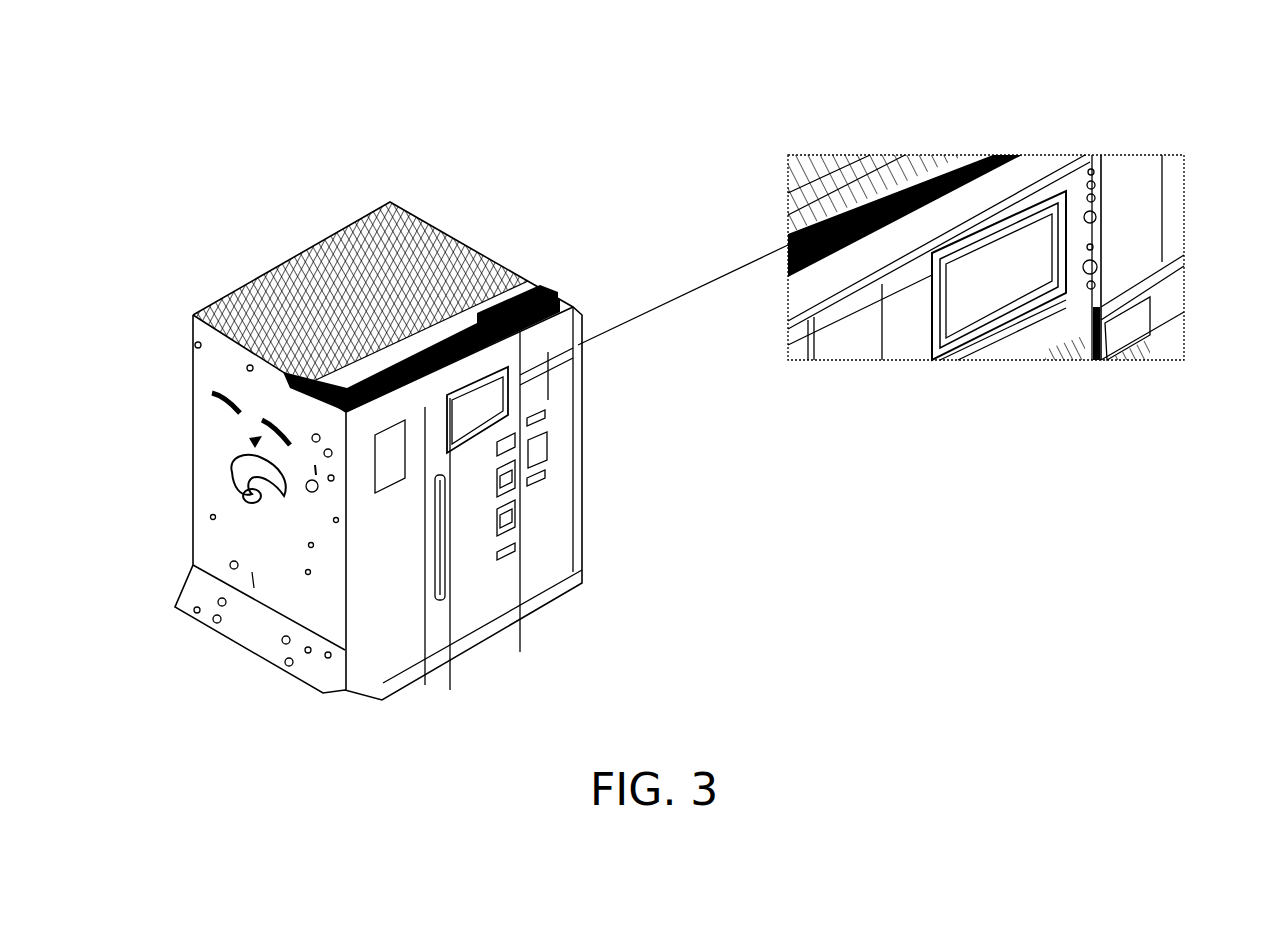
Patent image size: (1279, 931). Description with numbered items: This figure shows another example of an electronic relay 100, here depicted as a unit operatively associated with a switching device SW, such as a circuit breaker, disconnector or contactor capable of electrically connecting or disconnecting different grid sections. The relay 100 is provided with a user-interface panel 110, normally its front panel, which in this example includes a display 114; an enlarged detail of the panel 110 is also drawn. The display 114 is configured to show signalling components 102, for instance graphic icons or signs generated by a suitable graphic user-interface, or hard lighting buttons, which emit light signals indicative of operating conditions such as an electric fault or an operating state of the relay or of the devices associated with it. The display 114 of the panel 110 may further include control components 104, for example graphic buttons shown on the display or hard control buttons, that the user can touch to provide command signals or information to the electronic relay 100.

The switching device SW is at (333, 436).
The electronic relay 100 is at (538, 352).
The signalling components 102 is at (1100, 217).
The control components 104 is at (1097, 265).
The user-interface panel 110 is at (1022, 290).
The display 114 is at (1000, 263).